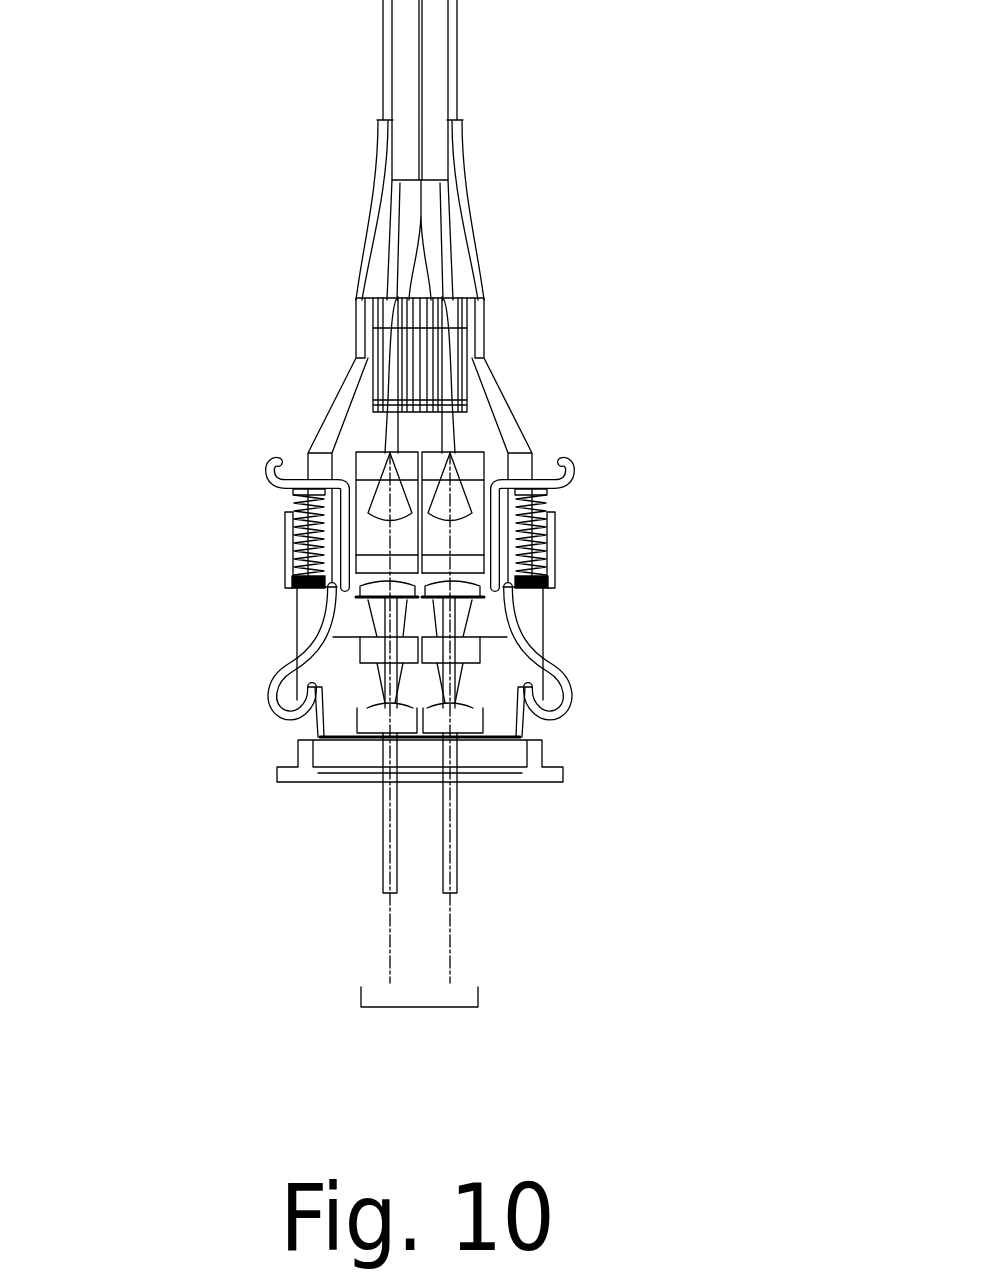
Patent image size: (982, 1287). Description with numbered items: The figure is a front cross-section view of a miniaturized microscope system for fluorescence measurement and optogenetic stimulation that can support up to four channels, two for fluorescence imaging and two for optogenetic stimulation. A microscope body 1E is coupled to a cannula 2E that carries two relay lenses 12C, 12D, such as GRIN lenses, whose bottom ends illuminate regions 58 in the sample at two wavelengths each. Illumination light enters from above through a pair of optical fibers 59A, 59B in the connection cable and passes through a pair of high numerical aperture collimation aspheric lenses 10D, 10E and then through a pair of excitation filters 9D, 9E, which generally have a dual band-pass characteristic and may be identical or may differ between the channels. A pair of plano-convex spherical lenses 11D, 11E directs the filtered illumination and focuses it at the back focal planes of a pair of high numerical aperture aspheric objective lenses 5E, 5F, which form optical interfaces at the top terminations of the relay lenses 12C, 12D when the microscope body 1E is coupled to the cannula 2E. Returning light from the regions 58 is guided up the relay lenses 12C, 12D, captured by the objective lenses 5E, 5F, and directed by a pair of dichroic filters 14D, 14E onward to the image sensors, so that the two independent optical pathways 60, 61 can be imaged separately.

The optical fiber 59B is at (383, 425).
The optical fiber 59A is at (457, 435).
The collimation aspheric lens 10E is at (353, 495).
The collimation aspheric lens 10D is at (470, 493).
The excitation filter 9E is at (350, 567).
The excitation filter 9D is at (487, 567).
The plano-convex spherical lens 11E is at (337, 590).
The plano-convex spherical lens 11D is at (490, 592).
The microscope body 1E is at (530, 603).
The dichroic filter 14E is at (356, 642).
The dichroic filter 14D is at (484, 642).
The aspheric objective lens 5F is at (357, 723).
The aspheric objective lens 5E is at (483, 723).
The cannula 2E is at (359, 755).
The relay lens 12D is at (383, 832).
The relay lens 12C is at (457, 805).
The optical pathway 61 is at (390, 933).
The optical pathway 60 is at (450, 913).
The region 58 is at (417, 1007).